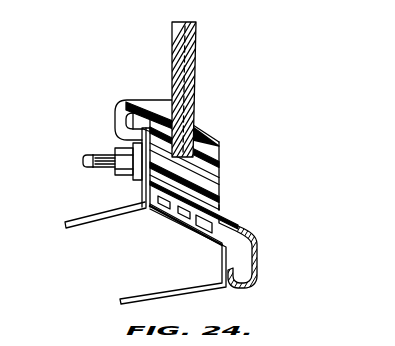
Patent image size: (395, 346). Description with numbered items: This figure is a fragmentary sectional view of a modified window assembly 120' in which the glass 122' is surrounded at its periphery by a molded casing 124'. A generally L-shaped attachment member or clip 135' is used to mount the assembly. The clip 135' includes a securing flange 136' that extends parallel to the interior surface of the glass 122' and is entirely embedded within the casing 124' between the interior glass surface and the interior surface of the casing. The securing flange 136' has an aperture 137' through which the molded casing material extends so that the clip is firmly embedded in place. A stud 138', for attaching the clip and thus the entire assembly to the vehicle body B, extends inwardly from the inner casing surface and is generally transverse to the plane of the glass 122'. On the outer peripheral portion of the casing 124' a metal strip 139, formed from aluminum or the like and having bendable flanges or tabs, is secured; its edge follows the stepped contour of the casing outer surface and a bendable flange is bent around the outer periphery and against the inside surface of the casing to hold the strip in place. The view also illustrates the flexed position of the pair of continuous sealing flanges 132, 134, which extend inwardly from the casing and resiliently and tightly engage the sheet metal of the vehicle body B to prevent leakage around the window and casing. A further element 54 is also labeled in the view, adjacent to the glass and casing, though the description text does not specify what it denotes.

The glass 122' is at (192, 88).
The securing flange 136' is at (149, 104).
The aperture 137' is at (122, 120).
The stud 138' is at (88, 170).
The sealing flange 134 is at (158, 210).
The casing 124' is at (204, 167).
The wedge 54 is at (200, 133).
The attachment member or clip 135' is at (210, 195).
The modified window assembly 120' is at (255, 170).
The metal strip 139 is at (257, 234).
The sealing flange 132 is at (195, 231).
The vehicle body B is at (97, 222).